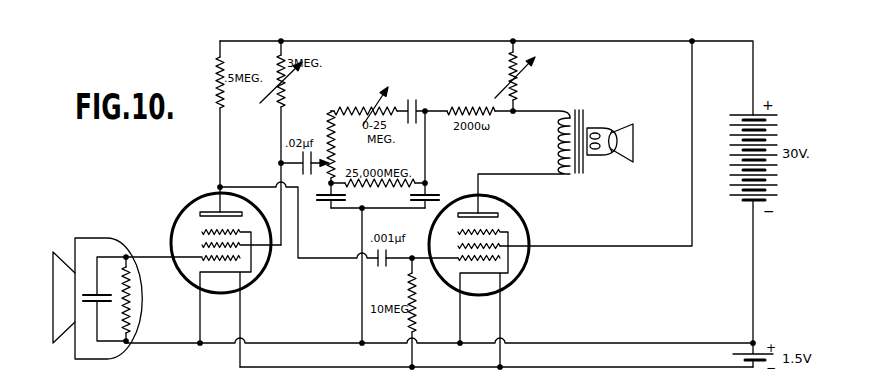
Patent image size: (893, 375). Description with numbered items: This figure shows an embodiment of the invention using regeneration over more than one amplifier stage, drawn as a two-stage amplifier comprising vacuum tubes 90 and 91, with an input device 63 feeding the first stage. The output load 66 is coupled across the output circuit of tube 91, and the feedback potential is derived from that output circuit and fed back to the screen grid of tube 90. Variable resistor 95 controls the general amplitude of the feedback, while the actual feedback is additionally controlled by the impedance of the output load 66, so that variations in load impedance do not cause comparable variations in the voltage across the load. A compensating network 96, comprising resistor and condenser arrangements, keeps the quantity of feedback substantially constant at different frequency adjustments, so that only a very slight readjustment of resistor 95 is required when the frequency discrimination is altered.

The microphone 63 is at (98, 247).
The vacuum tube 90 is at (257, 267).
The vacuum tube 91 is at (517, 268).
The variable resistor 95 is at (523, 80).
The compensating network 96 is at (350, 135).
The output load 66 is at (570, 175).